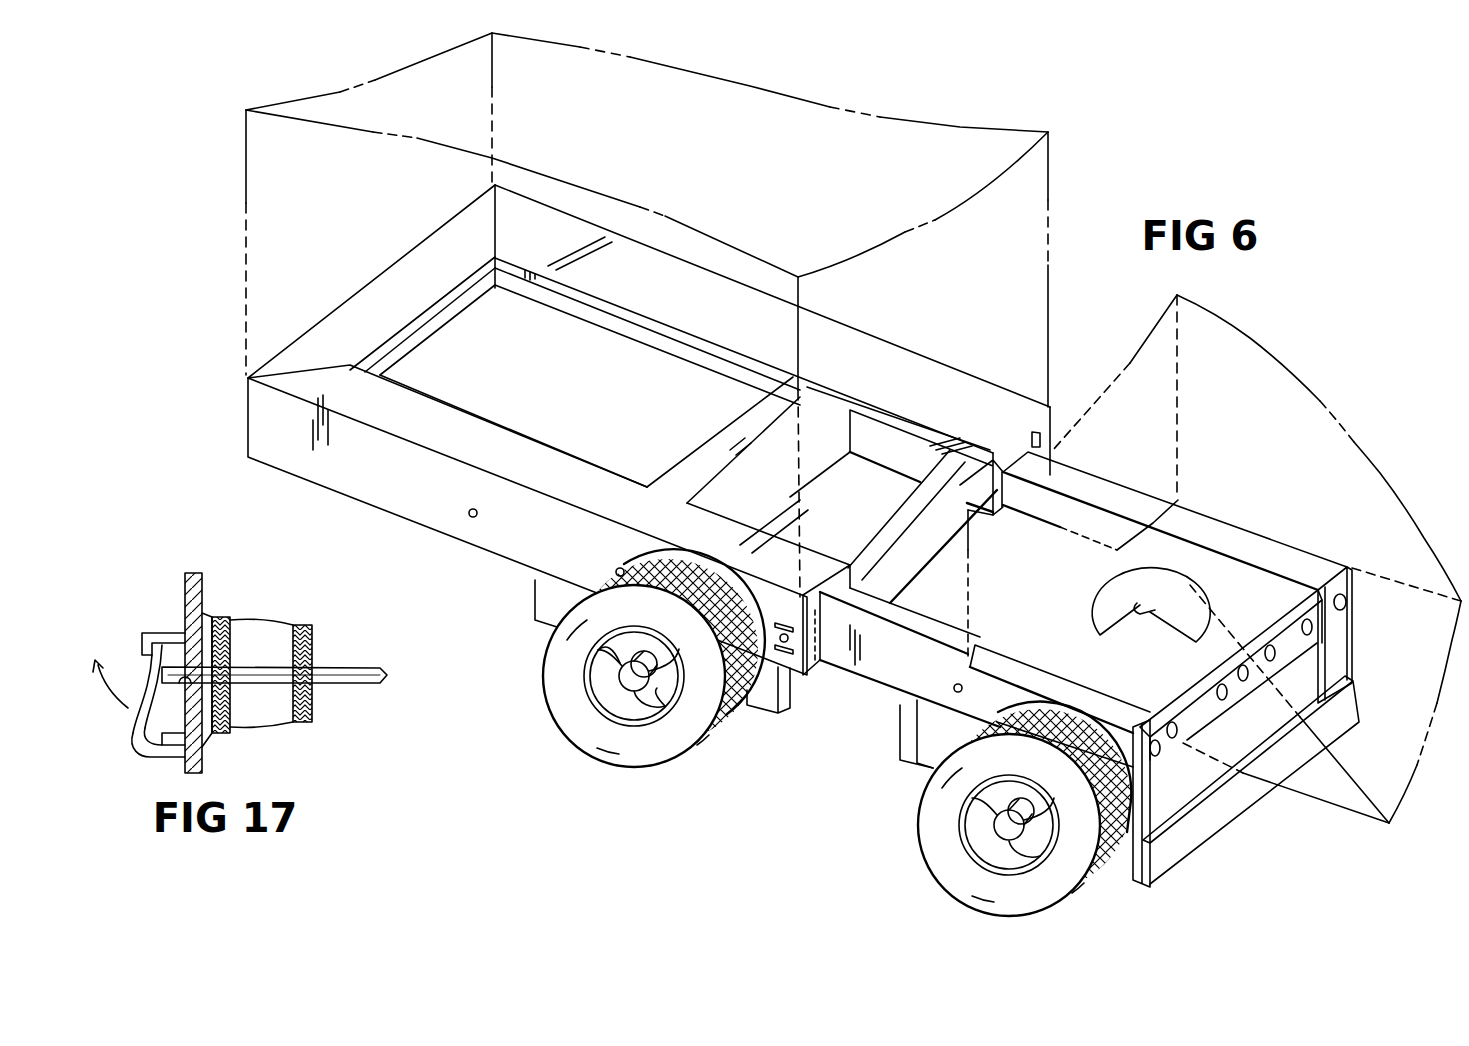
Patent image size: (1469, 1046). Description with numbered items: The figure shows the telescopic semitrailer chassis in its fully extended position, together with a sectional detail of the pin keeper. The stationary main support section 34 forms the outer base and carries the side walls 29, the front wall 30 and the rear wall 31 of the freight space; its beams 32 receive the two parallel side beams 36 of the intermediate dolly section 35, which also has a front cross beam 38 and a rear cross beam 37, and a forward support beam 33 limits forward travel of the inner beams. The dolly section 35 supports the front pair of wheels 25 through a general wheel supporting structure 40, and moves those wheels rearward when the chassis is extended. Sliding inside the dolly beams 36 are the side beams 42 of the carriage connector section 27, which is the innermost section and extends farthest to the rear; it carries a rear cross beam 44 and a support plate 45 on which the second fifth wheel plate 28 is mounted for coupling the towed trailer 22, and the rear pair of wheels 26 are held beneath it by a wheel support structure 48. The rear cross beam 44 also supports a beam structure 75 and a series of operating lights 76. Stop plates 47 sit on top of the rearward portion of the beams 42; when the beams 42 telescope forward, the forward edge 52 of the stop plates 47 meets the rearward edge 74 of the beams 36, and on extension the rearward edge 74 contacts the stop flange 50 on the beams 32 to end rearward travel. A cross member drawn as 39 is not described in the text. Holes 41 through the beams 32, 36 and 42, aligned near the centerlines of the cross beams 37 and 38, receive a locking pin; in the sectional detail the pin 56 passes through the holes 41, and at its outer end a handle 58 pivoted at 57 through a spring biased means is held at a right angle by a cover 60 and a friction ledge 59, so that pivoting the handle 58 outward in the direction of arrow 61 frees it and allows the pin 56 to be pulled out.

In FIG. 6, the trailer 22 is at (1228, 337).
In FIG. 6, the front pair of wheels 25 is at (687, 743).
In FIG. 6, the rear pair of wheels 26 is at (932, 845).
In FIG. 6, the carriage connector section 27 is at (975, 718).
In FIG. 6, the second fifth wheel plate 28 is at (1190, 597).
In FIG. 6, the side walls 29 is at (804, 98).
In FIG. 6, the front wall 30 is at (436, 68).
In FIG. 6, the rear wall 31 is at (905, 238).
In FIG. 6, the beams 32 is at (862, 342).
In FIG. 17, the beams 32 is at (190, 573).
In FIG. 6, the forward support beam 33 is at (385, 284).
In FIG. 6, the main support section 34 is at (398, 520).
In FIG. 6, the intermediate dolly section 35 is at (830, 468).
In FIG. 6, the side beams 36 is at (918, 452).
In FIG. 17, the side beams 36 is at (207, 610).
In FIG. 6, the rear cross beam 37 is at (868, 542).
In FIG. 6, the front cross beam 38 is at (793, 505).
In FIG. 6, the cross member 39 is at (740, 420).
In FIG. 6, the wheel supporting structure 40 is at (768, 707).
In FIG. 6, the holes 41 is at (478, 515).
In FIG. 17, the holes 41 is at (178, 686).
In FIG. 6, the side beams 42 is at (1060, 512).
In FIG. 17, the side beams 42 is at (226, 617).
In FIG. 6, the rear cross beam 44 is at (1045, 612).
In FIG. 6, the support plate 45 is at (1186, 663).
In FIG. 6, the stop plates 47 is at (1302, 560).
In FIG. 6, the wheel support structure 48 is at (917, 768).
In FIG. 6, the stop flange 50 is at (1040, 435).
In FIG. 6, the forward edge 52 is at (1160, 513).
In FIG. 17, the pin 56 is at (333, 667).
In FIG. 17, the pivot 57 is at (150, 675).
In FIG. 17, the handle 58 is at (145, 752).
In FIG. 17, the friction ledge 59 is at (168, 747).
In FIG. 17, the cover 60 is at (160, 633).
In FIG. 17, the arrow 61 is at (108, 700).
In FIG. 6, the rearward edge 74 is at (853, 582).
In FIG. 6, the beam structure 75 is at (1350, 680).
In FIG. 6, the operating lights 76 is at (1315, 626).